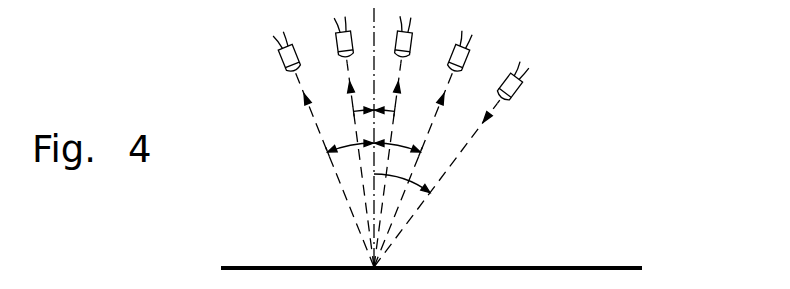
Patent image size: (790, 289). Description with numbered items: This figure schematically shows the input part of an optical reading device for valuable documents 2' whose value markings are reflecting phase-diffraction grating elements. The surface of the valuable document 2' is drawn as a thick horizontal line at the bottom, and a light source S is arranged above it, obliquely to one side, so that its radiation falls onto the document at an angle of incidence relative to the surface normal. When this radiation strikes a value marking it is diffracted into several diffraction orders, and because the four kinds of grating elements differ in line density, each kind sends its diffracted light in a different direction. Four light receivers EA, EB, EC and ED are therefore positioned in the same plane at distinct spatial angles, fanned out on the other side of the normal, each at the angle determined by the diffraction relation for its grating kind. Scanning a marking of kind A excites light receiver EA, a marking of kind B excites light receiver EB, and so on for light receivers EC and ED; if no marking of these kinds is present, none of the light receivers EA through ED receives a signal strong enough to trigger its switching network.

The light receiver EA is at (281, 63).
The light receiver EB is at (337, 47).
The light receiver EC is at (409, 43).
The light receiver ED is at (466, 61).
The light source S is at (517, 89).
The valuable document 2' is at (431, 245).